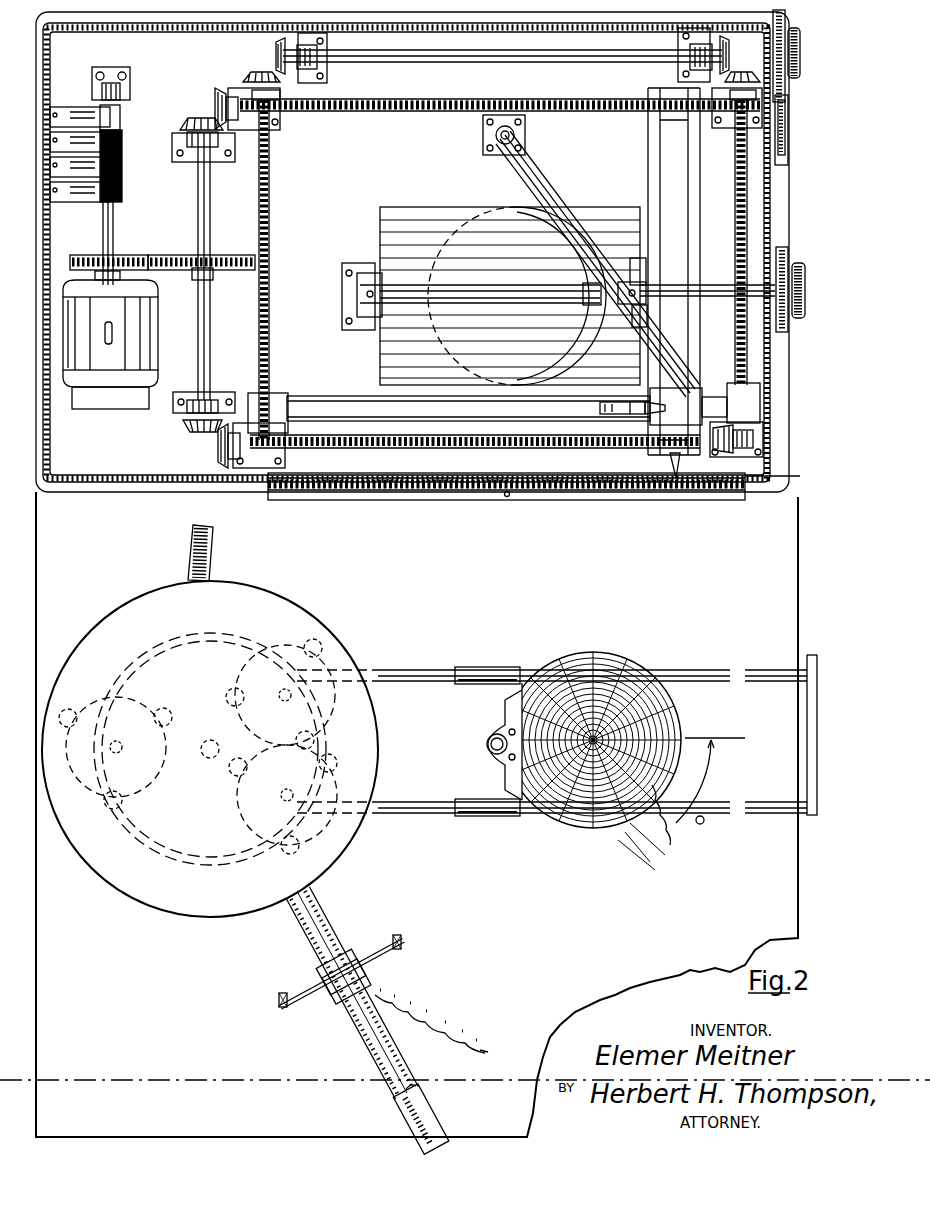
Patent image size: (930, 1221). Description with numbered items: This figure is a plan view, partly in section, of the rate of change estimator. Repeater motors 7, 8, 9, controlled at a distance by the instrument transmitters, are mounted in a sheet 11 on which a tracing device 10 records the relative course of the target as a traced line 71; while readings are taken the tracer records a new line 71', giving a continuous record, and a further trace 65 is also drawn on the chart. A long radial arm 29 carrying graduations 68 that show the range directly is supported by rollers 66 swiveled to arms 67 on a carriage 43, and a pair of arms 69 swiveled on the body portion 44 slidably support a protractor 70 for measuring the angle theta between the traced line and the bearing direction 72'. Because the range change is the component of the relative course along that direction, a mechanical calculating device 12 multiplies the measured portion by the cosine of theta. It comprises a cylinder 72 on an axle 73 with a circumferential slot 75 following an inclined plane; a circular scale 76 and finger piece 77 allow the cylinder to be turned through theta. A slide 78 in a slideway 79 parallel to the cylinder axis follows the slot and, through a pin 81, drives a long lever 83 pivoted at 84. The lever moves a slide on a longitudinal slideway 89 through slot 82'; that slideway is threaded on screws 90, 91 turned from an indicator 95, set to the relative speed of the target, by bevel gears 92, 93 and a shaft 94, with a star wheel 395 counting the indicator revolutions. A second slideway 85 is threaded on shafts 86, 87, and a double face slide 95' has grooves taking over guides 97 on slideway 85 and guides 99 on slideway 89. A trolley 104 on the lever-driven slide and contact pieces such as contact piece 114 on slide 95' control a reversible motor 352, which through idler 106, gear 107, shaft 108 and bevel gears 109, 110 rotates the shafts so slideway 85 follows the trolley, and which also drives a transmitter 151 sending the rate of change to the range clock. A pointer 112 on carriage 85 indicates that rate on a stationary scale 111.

The repeater motor 7 is at (280, 694).
The repeater motor 8 is at (283, 799).
The repeater motor 9 is at (115, 753).
The tracing device 10 is at (310, 614).
The sheet 11 is at (417, 814).
The mechanical calculating device 12 is at (470, 501).
The long radial arm 29 is at (330, 938).
The carriage 43 is at (350, 966).
The body portion 44 is at (203, 716).
The curve trace 65 is at (432, 1013).
The supporting roller 66 is at (401, 940).
The arm 67 is at (318, 1012).
The graduations 68 is at (378, 1074).
The arms 69 is at (424, 668).
The protractor 70 is at (606, 652).
The line 71 is at (669, 827).
The new line 71' is at (502, 1041).
The cylinder 72 is at (510, 296).
The line 72' is at (710, 765).
The axle 73 is at (716, 284).
The circumferential slot 75 is at (592, 322).
The circular scale 76 is at (789, 252).
The finger piece 77 is at (798, 320).
The slide 78 is at (625, 291).
The slideway 79 is at (452, 290).
The pin 81 is at (588, 282).
The slot 82' is at (600, 262).
The long lever 83 is at (548, 190).
The pivot 84 is at (527, 135).
The second slideway 85 is at (674, 271).
The shaft 86 is at (533, 98).
The shaft 87 is at (582, 447).
The longitudinal slideway 89 is at (468, 408).
The screw 90 is at (270, 215).
The screw 91 is at (734, 205).
The bevel gear 92 is at (250, 80).
The bevel gear 93 is at (277, 52).
The shaft 94 is at (566, 56).
The indicator 95 is at (791, 51).
The double face slide 95' is at (705, 397).
The guides 97 is at (688, 205).
The guides 99 is at (410, 400).
The brush or trolley 104 is at (652, 400).
The idler 106 is at (122, 255).
The gear 107 is at (230, 255).
The shaft 108 is at (213, 200).
The bevel gear 109 is at (190, 125).
The bevel gear 110 is at (215, 98).
The stationary scale 111 is at (742, 480).
The pointer 112 is at (668, 456).
The contact piece 114 is at (606, 408).
The transmitter 151 is at (124, 124).
The reversible motor 352 is at (150, 336).
The star wheel 395 is at (788, 130).